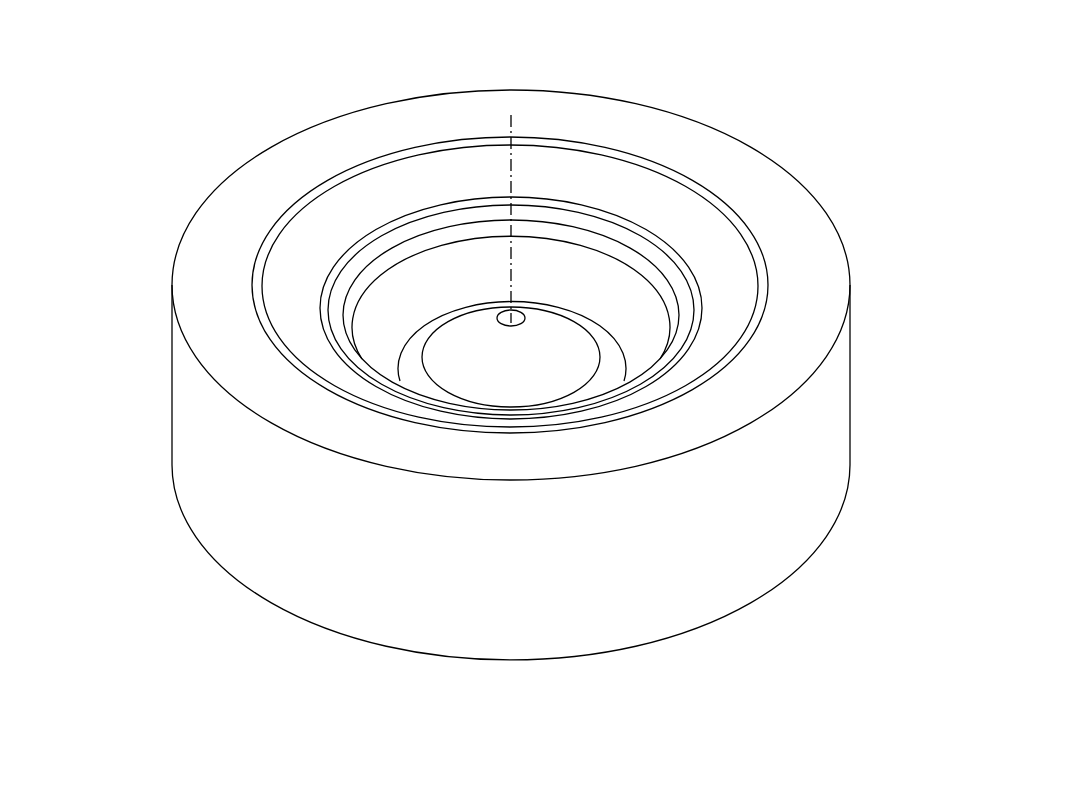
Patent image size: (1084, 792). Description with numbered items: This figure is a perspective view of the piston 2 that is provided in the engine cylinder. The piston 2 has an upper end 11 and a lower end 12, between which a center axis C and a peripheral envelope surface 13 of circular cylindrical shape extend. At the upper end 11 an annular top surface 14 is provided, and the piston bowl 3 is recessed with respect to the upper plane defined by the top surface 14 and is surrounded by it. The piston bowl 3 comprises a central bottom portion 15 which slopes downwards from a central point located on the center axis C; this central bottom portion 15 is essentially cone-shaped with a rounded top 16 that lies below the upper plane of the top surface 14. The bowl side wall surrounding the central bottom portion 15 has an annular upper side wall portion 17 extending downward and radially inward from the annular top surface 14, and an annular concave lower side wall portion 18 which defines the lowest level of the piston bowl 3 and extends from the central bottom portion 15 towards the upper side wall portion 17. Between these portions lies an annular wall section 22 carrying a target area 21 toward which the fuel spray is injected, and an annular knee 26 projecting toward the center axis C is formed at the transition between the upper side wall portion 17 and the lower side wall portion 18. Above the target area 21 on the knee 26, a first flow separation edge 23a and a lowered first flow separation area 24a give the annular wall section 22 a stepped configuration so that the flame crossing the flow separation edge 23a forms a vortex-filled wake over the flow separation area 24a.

The piston 2 is at (140, 277).
The piston bowl 3 is at (540, 157).
The upper end 11 is at (242, 165).
The lower end 12 is at (232, 575).
The peripheral envelope surface 13 is at (183, 413).
The annular top surface 14 is at (727, 153).
The central bottom portion 15 is at (550, 327).
The rounded top 16 is at (513, 312).
The upper side wall portion 17 is at (623, 162).
The lower side wall portion 18 is at (628, 323).
The target area 21 is at (616, 243).
The annular wall section 22 is at (437, 162).
The first flow separation edge 23a is at (700, 304).
The first flow separation area 24a is at (710, 320).
The annular knee 26 is at (390, 237).
The center axis C is at (510, 263).